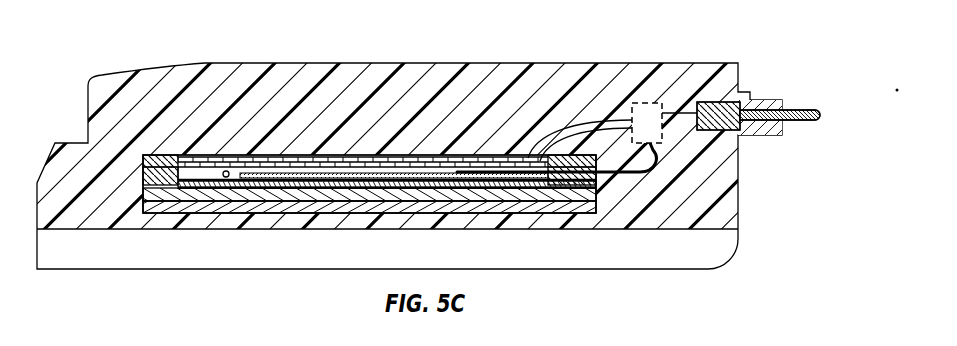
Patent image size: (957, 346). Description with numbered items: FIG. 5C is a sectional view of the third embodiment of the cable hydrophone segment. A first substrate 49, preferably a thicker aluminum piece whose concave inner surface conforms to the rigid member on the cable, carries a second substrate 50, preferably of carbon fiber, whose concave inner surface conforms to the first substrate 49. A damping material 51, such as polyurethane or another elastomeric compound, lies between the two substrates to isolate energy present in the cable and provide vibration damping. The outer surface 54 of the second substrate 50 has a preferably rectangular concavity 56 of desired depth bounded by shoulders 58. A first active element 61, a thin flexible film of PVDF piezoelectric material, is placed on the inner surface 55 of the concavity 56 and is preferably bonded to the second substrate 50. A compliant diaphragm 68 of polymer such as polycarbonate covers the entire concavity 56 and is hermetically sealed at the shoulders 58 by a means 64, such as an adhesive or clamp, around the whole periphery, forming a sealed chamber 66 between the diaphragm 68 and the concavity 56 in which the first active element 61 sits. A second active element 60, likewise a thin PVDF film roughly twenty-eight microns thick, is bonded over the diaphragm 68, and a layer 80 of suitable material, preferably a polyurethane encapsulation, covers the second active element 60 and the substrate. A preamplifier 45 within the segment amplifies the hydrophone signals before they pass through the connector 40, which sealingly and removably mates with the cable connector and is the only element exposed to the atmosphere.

The connector 40 is at (798, 108).
The preamplifier 45 is at (642, 108).
The first substrate 49 is at (231, 203).
The second substrate 50 is at (379, 181).
The damping material 51 is at (267, 195).
The outer surface 54 is at (613, 175).
The inner surface 55 is at (224, 177).
The concavity 56 is at (420, 172).
The shoulders 58 is at (162, 175).
The second active element 60 is at (277, 157).
The first active element 61 is at (292, 187).
The sealing means 64 is at (157, 153).
The sealed chamber 66 is at (214, 170).
The compliant diaphragm 68 is at (324, 165).
The layer 80 is at (468, 85).